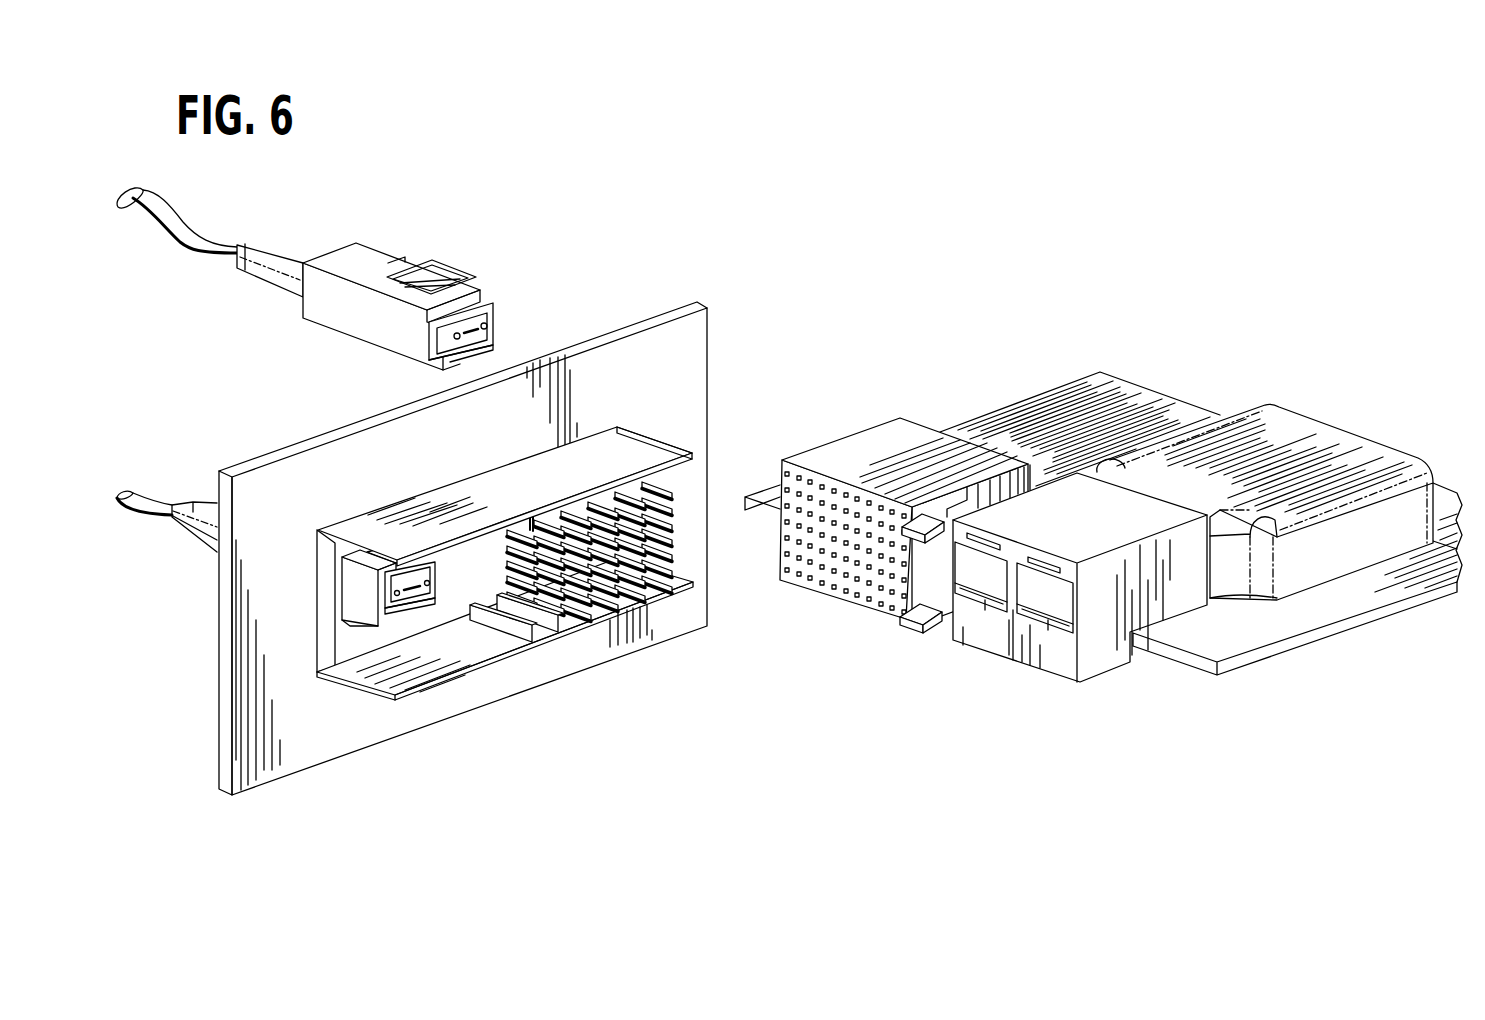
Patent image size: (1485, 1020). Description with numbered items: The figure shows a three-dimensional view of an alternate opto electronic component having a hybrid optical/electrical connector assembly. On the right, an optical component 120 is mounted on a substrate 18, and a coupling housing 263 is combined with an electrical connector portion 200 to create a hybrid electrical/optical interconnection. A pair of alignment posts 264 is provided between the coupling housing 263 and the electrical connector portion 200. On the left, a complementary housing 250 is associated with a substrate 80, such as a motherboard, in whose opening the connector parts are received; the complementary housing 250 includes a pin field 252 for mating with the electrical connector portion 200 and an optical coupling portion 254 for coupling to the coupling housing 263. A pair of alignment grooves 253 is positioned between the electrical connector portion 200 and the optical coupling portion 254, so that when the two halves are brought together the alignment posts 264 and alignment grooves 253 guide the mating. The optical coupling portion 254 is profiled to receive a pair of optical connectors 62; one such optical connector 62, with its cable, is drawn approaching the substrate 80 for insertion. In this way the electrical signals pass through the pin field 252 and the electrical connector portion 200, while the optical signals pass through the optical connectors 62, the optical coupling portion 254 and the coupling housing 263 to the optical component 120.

The optical connector 62 is at (417, 258).
The substrate 80 is at (636, 320).
The complementary housing 250 is at (664, 436).
The pin field 252 is at (622, 580).
The alignment grooves 253 is at (537, 630).
The optical coupling portion 254 is at (476, 645).
The electrical connector portion 200 is at (845, 431).
The substrate 18 is at (1163, 388).
The optical component 120 is at (1358, 430).
The alignment posts 264 is at (917, 622).
The coupling housing 263 is at (1107, 675).